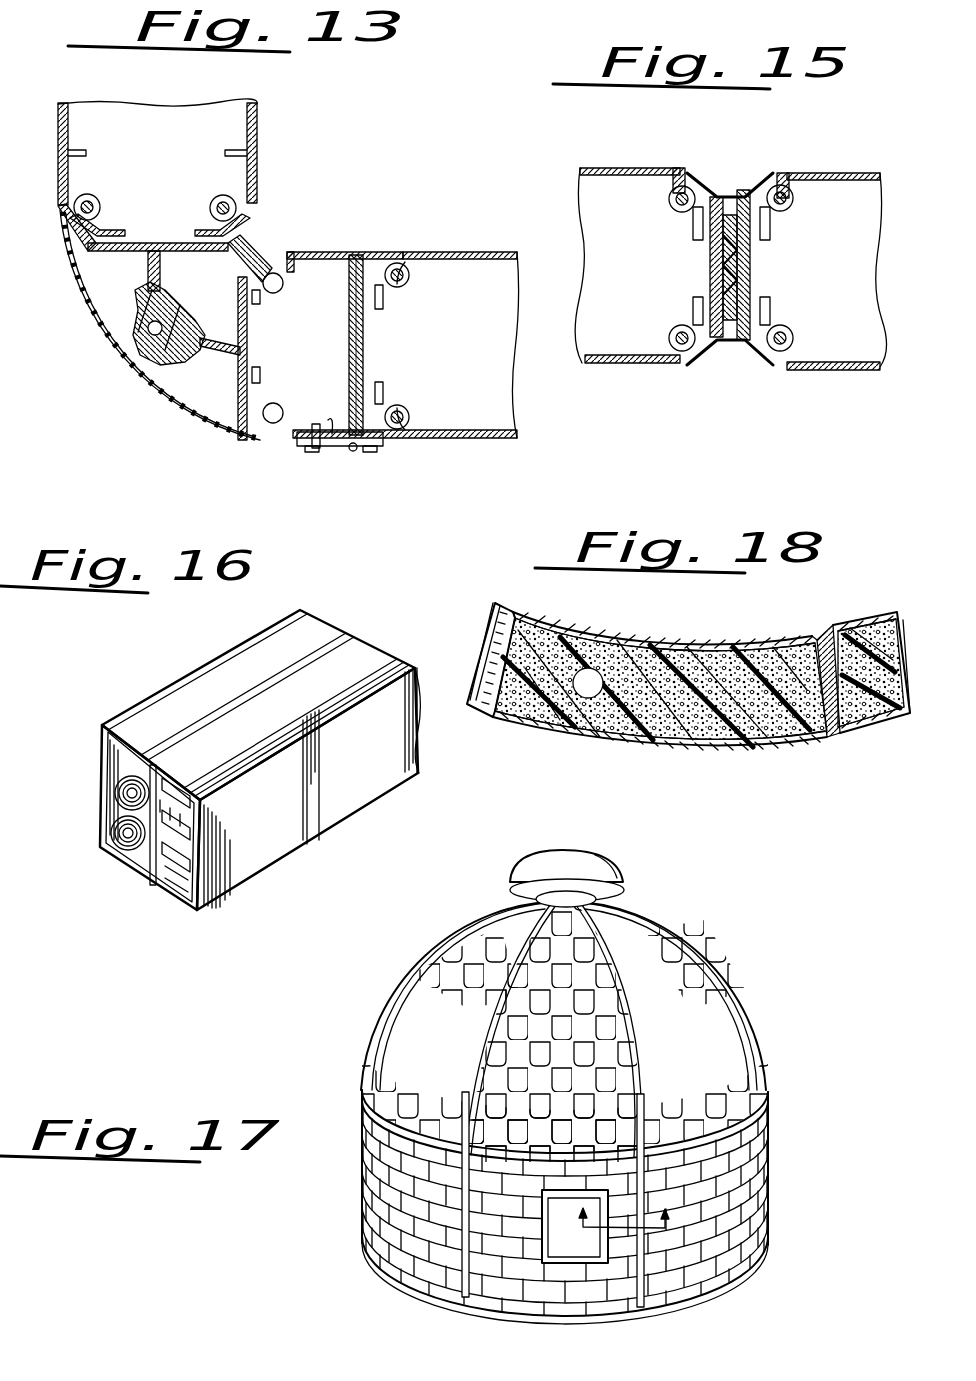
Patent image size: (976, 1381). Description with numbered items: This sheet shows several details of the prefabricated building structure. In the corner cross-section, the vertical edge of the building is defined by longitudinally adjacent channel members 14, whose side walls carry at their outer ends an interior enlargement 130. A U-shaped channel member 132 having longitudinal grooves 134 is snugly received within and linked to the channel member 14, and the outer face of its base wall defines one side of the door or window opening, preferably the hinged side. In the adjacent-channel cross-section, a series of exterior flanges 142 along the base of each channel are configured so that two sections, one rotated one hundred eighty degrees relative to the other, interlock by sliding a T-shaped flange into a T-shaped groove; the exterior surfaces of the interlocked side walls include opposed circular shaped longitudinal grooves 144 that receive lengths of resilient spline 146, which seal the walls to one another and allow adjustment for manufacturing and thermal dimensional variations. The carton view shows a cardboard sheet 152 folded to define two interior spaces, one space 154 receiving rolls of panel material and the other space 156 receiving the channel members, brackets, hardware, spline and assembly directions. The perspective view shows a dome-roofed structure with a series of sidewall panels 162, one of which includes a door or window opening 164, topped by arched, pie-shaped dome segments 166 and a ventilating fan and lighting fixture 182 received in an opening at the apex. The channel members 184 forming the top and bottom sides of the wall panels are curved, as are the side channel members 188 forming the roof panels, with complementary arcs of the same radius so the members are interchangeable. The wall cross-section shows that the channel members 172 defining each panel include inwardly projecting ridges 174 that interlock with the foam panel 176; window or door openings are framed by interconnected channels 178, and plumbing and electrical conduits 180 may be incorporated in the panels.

In FIG. 13, the channel member 14 is at (150, 216).
In FIG. 13, the interior enlargement 130 is at (258, 158).
In FIG. 13, the U-shaped channel member 132 is at (346, 368).
In FIG. 13, the longitudinal grooves 134 is at (331, 430).
In FIG. 15, the exterior flanges 142 is at (730, 345).
In FIG. 15, the circular shaped longitudinal grooves 144 is at (723, 193).
In FIG. 15, the spline 146 is at (742, 193).
In FIG. 16, the cardboard sheet 152 is at (212, 678).
In FIG. 16, the interior space 154 is at (103, 845).
In FIG. 16, the interior space 156 is at (173, 877).
In FIG. 17, the sidewall panels 162 is at (495, 1262).
In FIG. 17, the door or window opening 164 is at (570, 1247).
In FIG. 17, the dome segments 166 is at (667, 963).
In FIG. 18, the channel members 172 is at (783, 637).
In FIG. 18, the inwardly projecting ridges 174 is at (760, 752).
In FIG. 18, the foam panel 176 is at (670, 720).
In FIG. 18, the interconnected channels 178 is at (490, 658).
In FIG. 18, the plumbing and electrical conduits 180 is at (591, 680).
In FIG. 17, the ventilating fan and lighting fixture 182 is at (540, 863).
In FIG. 17, the channel members 184 is at (380, 1130).
In FIG. 17, the side channel members 188 is at (407, 967).